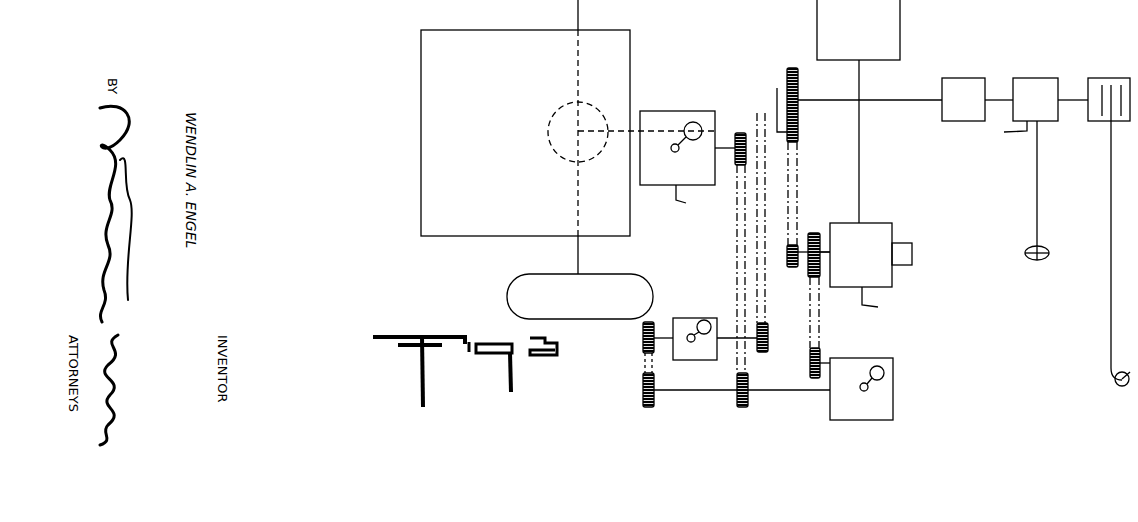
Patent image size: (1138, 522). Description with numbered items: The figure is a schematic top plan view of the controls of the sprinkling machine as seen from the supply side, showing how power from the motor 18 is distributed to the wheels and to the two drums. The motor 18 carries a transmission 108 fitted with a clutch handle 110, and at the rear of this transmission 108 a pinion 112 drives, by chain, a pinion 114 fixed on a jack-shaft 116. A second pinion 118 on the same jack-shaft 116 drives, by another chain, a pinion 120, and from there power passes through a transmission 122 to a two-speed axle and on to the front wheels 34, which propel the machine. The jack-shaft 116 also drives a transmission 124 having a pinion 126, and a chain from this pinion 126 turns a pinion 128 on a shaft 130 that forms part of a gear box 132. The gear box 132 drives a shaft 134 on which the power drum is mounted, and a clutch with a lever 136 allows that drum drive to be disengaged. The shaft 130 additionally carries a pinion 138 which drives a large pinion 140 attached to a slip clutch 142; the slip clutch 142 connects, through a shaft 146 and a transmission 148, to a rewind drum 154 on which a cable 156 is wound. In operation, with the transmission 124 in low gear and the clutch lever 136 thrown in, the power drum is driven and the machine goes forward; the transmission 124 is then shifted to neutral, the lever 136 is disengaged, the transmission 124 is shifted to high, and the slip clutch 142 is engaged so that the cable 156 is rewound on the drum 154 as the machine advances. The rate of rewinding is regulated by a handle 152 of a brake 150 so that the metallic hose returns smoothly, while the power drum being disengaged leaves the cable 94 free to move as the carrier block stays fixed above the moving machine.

The motor 18 is at (545, 77).
The front wheels 34 is at (592, 304).
The cable 94 is at (875, 30).
The transmission 108 is at (668, 129).
The clutch handle 110 is at (692, 202).
The pinion 112 is at (744, 132).
The pinion 114 is at (737, 403).
The jack-shaft 116 is at (704, 389).
The pinion 118 is at (643, 388).
The pinion 120 is at (643, 348).
The transmission 122 is at (696, 316).
The transmission 124 is at (878, 357).
The pinion 126 is at (810, 370).
The pinion 128 is at (810, 233).
The shaft 130 is at (827, 234).
The gear box 132 is at (873, 262).
The shaft 134 is at (858, 154).
The clutch lever 136 is at (883, 305).
The pinion 138 is at (798, 267).
The large pinion 140 is at (787, 75).
The slip clutch 142 is at (777, 88).
The shaft 146 is at (838, 99).
The transmission 148 is at (960, 78).
The brake 150 is at (1030, 78).
The handle 152 is at (1043, 248).
The rewind drum 154 is at (1105, 78).
The cable 156 is at (1116, 304).